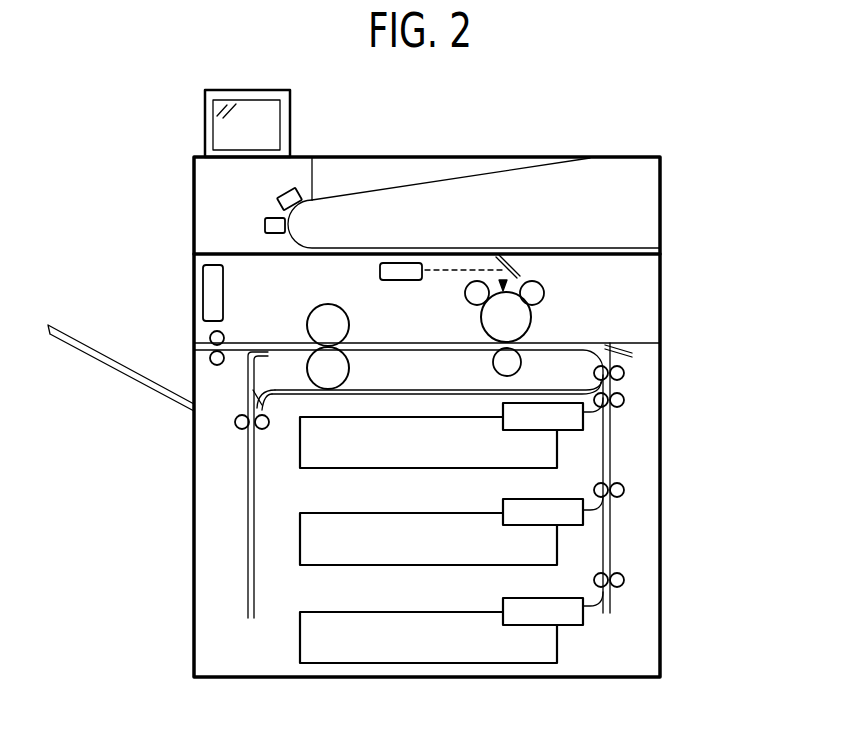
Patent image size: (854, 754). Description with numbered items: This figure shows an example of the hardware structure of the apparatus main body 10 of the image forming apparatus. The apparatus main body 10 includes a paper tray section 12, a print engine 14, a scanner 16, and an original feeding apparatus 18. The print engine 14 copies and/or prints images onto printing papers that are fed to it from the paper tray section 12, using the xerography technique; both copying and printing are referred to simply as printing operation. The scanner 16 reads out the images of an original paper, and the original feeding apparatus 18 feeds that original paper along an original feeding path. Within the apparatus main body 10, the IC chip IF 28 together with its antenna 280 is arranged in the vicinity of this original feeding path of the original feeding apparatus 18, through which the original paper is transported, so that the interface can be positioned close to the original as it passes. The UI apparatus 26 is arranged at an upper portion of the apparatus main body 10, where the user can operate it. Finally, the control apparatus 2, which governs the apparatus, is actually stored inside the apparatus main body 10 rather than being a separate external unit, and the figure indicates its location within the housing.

The apparatus main body 10 is at (396, 394).
The paper tray section 12 is at (641, 480).
The print engine 14 is at (571, 299).
The scanner 16 is at (265, 226).
The original feeding apparatus 18 is at (509, 122).
The control apparatus 2 is at (203, 283).
The UI apparatus 26 is at (205, 117).
The IC chip IF 28 is at (294, 190).
The antenna 280 is at (335, 148).